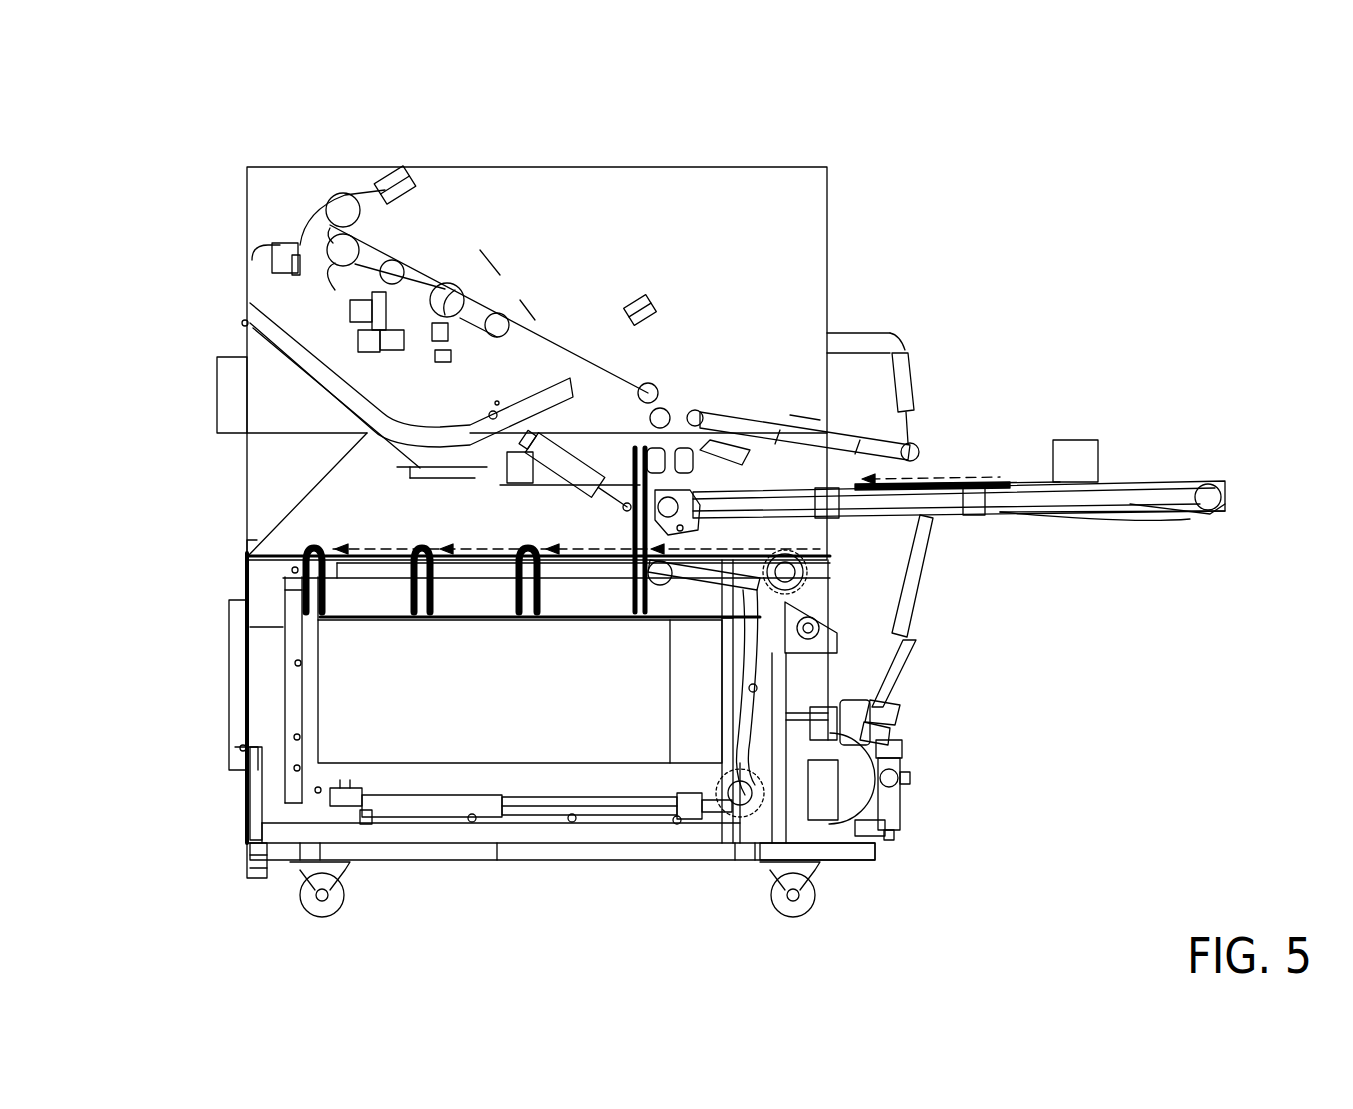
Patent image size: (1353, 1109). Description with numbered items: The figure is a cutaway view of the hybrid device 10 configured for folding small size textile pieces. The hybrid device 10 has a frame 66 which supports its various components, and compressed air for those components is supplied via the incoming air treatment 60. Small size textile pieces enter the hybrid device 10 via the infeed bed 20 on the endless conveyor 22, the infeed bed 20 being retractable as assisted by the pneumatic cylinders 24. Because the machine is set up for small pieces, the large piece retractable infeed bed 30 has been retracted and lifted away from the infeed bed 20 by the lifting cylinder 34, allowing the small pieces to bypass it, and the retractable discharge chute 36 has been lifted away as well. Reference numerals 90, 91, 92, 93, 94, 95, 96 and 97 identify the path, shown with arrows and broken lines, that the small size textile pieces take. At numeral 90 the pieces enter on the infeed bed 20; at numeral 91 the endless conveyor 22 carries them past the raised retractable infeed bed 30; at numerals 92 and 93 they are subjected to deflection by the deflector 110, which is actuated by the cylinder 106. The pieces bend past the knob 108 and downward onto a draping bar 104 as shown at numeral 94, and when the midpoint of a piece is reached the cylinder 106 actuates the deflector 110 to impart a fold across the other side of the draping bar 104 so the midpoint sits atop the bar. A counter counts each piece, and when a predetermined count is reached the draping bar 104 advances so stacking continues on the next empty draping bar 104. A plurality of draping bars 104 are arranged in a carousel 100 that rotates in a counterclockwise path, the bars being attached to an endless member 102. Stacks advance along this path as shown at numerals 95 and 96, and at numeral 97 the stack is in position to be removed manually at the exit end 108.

The hybrid device 10 is at (240, 116).
The infeed bed 20 is at (1140, 485).
The endless conveyor 22 is at (1102, 513).
The pneumatic cylinders 24 is at (897, 664).
The large piece retractable infeed bed 30 is at (838, 425).
The lifting cylinder 34 is at (918, 385).
The retractable discharge chute 36 is at (327, 388).
The incoming air treatment 60 is at (883, 752).
The frame 66 is at (847, 853).
The path position 90 is at (988, 489).
The path position 91 is at (780, 470).
The path position 92 is at (690, 487).
The path position 93 is at (640, 470).
The path position 94 is at (620, 590).
The path position 95 is at (510, 622).
The path position 96 is at (385, 620).
The path position 97 is at (297, 585).
The carousel 100 is at (403, 517).
The endless member 102 is at (298, 737).
The draping bar 104 is at (527, 547).
The cylinder 106 is at (568, 458).
The exit end 108 is at (650, 487).
The deflector 110 is at (632, 488).